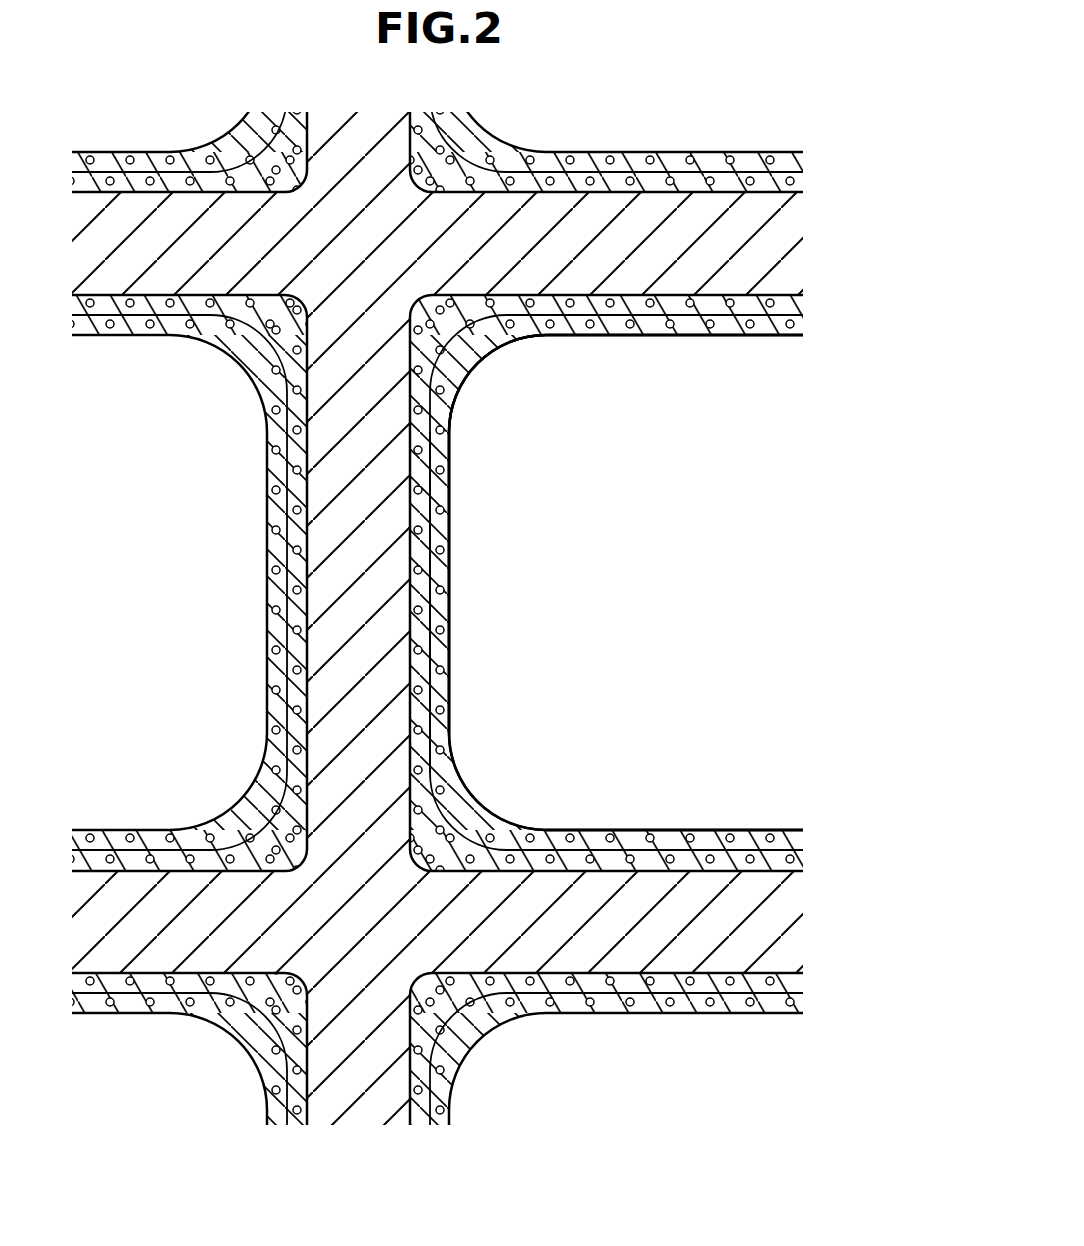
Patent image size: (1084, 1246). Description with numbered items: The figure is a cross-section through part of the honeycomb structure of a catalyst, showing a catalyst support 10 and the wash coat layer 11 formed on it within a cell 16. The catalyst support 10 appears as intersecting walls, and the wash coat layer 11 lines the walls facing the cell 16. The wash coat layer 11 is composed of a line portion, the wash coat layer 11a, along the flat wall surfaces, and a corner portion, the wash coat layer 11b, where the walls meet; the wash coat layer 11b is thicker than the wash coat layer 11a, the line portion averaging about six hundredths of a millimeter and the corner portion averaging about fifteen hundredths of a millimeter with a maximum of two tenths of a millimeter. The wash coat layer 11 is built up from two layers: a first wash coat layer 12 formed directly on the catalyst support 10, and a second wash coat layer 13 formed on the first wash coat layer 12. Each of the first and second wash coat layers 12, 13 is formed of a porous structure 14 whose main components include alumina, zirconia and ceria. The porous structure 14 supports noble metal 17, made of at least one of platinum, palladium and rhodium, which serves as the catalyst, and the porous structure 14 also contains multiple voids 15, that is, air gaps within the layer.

The catalyst support 10 is at (803, 195).
The wash coat layer 11 is at (803, 297).
The wash coat layer (line portion) 11a is at (620, 337).
The wash coat layer (corner portion) 11b is at (477, 363).
The first wash coat layer 12 is at (803, 857).
The second wash coat layer 13 is at (803, 841).
The porous structure 14 is at (420, 490).
The voids 15 is at (433, 617).
The cell 16 is at (713, 634).
The noble metal 17 is at (440, 680).